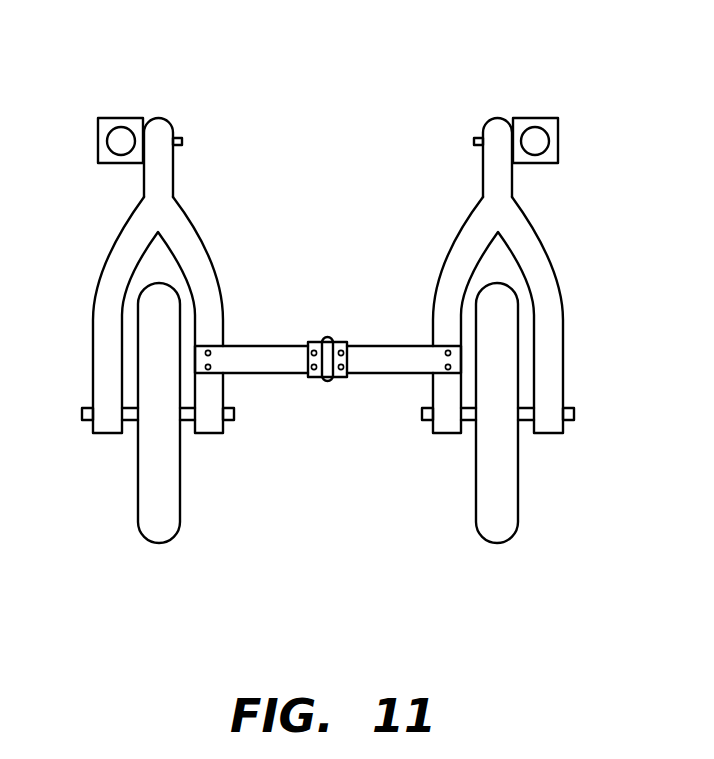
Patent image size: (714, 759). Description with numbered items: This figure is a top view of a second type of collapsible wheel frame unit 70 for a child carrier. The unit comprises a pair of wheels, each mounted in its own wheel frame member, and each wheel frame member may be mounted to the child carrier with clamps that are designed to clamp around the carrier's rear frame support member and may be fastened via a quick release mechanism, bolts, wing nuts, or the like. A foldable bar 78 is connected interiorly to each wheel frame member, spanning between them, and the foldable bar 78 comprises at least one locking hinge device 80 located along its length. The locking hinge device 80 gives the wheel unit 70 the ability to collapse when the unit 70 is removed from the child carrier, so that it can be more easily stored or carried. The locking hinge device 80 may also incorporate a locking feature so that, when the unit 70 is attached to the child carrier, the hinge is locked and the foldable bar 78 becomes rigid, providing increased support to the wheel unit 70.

The collapsible wheel frame unit 70 is at (328, 112).
The foldable bar 78 is at (392, 358).
The locking hinge device 80 is at (330, 355).